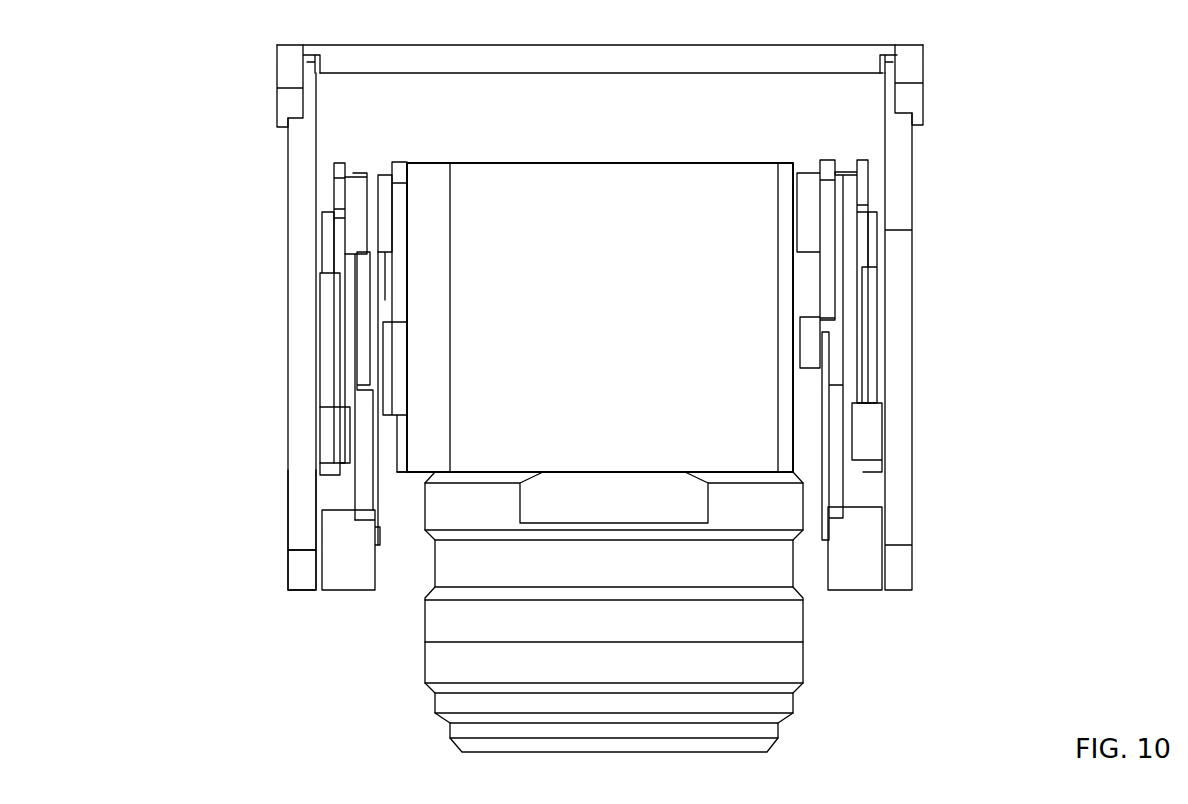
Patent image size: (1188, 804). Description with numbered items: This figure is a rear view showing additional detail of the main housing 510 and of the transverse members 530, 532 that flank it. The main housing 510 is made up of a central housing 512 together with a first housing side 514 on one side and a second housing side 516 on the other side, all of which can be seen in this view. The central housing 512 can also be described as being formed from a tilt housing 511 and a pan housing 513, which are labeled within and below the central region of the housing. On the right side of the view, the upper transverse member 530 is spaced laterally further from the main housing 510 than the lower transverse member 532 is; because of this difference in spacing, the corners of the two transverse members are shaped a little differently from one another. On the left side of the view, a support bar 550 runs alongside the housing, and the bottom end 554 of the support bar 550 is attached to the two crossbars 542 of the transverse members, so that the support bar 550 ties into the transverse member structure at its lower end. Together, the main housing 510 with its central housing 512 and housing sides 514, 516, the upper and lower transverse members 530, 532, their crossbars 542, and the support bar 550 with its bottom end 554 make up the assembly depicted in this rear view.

The main housing 510 is at (628, 214).
The tilt housing 511 is at (628, 379).
The central housing 512 is at (628, 285).
The pan housing 513 is at (645, 618).
The first housing side 514 is at (422, 298).
The second housing side 516 is at (788, 283).
The upper transverse member 530 is at (360, 223).
The lower transverse member 532 is at (367, 425).
The crossbars 542 is at (332, 390).
The support bar 550 is at (305, 326).
The bottom end 554 is at (303, 510).